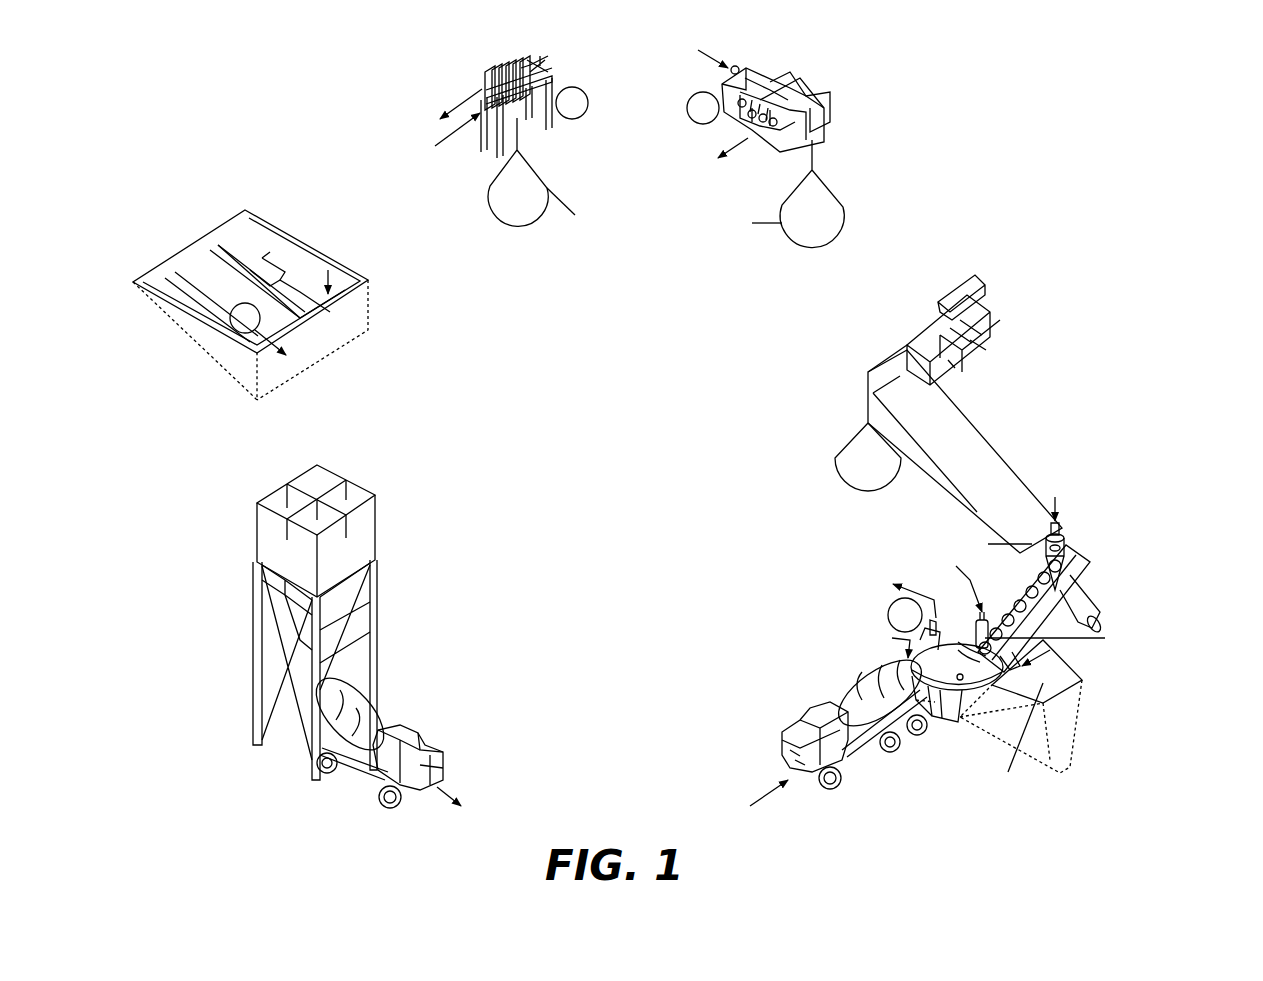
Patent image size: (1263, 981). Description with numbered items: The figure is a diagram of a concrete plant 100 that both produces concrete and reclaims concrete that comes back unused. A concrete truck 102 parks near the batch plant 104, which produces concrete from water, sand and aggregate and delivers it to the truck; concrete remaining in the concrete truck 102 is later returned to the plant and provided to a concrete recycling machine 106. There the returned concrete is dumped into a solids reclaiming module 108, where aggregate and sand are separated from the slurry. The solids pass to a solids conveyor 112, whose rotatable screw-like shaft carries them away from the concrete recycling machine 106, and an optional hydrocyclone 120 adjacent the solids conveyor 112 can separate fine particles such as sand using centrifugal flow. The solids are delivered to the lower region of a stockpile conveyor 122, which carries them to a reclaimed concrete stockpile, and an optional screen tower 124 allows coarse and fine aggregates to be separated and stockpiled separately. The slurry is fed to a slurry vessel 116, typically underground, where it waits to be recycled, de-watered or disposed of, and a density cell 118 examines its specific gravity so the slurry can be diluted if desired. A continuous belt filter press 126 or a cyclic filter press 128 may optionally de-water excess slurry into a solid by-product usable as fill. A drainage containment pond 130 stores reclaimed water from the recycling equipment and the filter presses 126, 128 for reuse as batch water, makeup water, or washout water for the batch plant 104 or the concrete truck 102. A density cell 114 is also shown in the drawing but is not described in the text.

The concrete plant 100 is at (647, 491).
The concrete truck 102 is at (418, 743).
The batch plant 104 is at (368, 533).
The concrete recycling machine 106 is at (858, 614).
The solids reclaiming module 108 is at (956, 705).
The solids conveyor 112 is at (1078, 590).
The density cell 114 is at (983, 618).
The slurry vessel 116 is at (1084, 695).
The density cell 118 is at (942, 622).
The hydrocyclone 120 is at (1062, 527).
The stockpile conveyor 122 is at (992, 518).
The screen tower 124 is at (916, 328).
The continuous belt filter press 126 is at (832, 122).
The cyclic filter press 128 is at (490, 70).
The drainage containment pond 130 is at (366, 276).